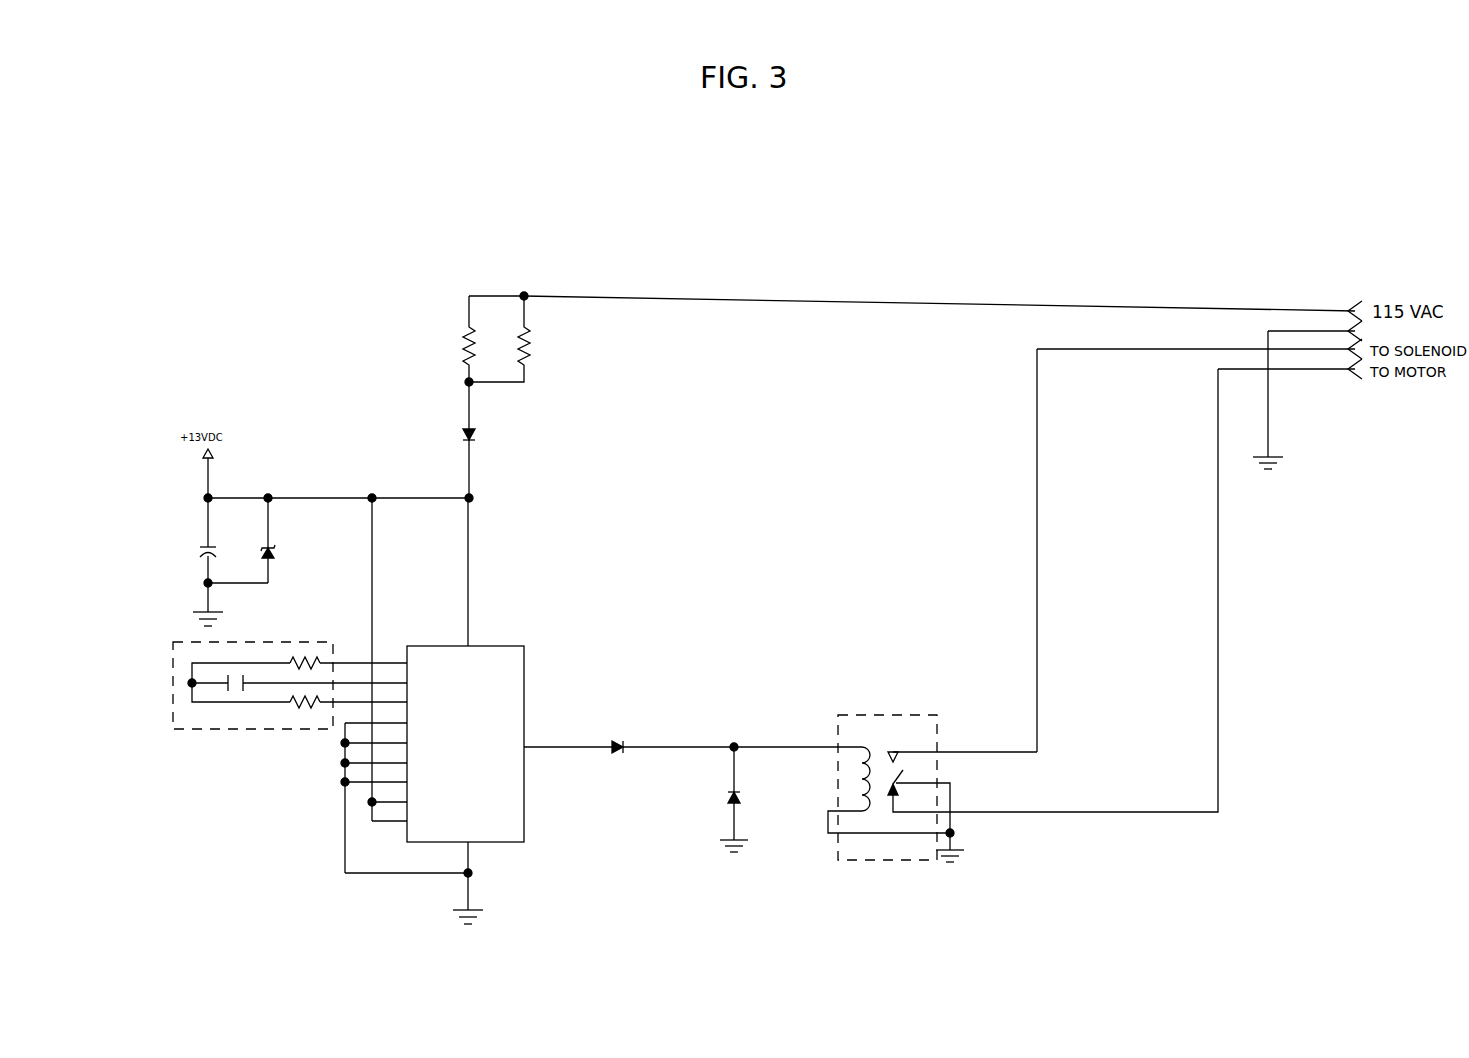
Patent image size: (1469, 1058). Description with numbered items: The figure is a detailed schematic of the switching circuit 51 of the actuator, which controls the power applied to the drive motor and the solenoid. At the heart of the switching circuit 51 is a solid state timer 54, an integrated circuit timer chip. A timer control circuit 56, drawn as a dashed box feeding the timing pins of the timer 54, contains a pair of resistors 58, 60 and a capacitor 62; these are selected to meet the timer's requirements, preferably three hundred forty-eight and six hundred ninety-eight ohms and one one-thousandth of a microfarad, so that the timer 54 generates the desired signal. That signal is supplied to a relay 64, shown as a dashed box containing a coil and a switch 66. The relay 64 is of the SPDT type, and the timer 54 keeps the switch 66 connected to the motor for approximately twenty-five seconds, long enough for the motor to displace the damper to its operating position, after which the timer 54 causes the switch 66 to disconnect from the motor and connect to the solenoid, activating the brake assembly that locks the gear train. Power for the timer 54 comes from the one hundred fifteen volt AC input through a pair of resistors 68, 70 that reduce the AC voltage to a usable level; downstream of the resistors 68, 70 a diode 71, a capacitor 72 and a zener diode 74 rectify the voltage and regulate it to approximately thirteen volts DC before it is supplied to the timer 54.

The switching circuit 51 is at (796, 255).
The solid state timer 54 is at (490, 716).
The timer control circuit 56 is at (256, 732).
The resistor 58 is at (312, 661).
The resistor 60 is at (302, 710).
The capacitor 62 is at (222, 688).
The relay 64 is at (865, 712).
The switch 66 is at (903, 770).
The resistor 68 is at (462, 343).
The resistor 70 is at (533, 343).
The diode 71 is at (462, 436).
The capacitor 72 is at (198, 545).
The zener diode 74 is at (270, 552).